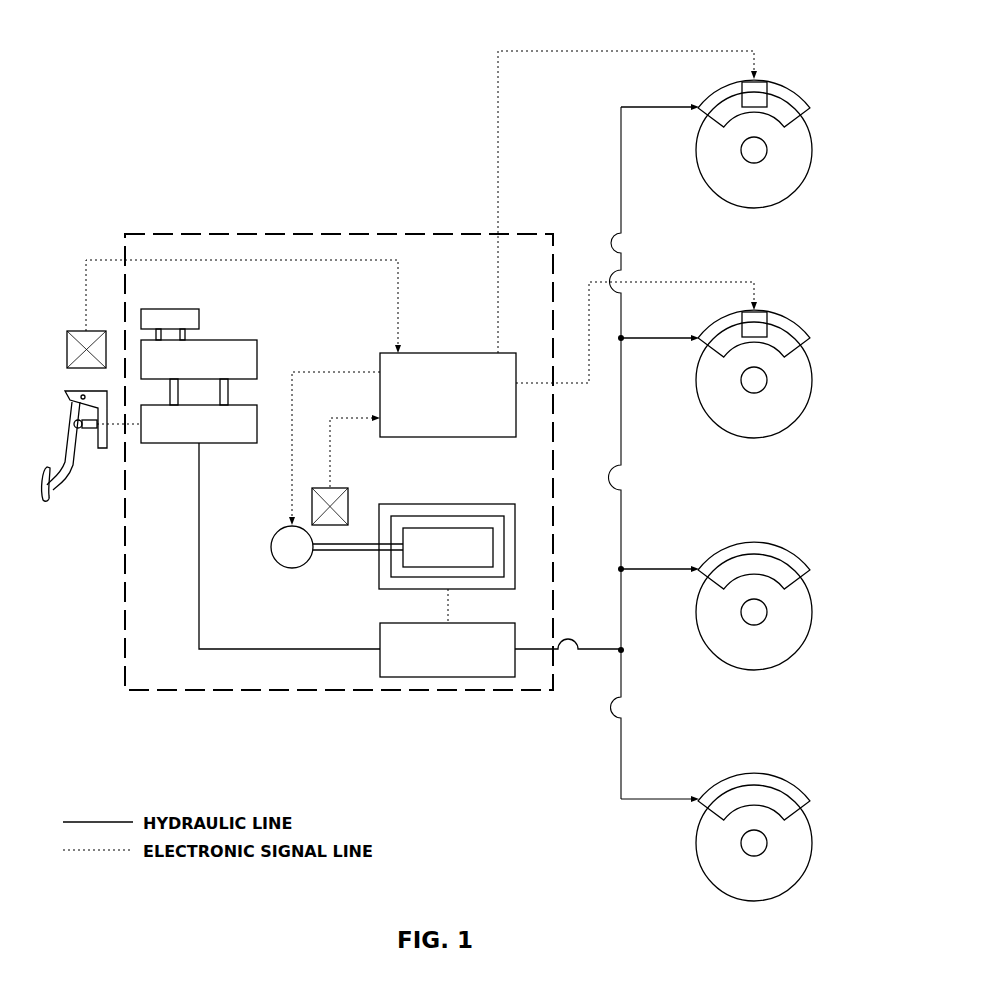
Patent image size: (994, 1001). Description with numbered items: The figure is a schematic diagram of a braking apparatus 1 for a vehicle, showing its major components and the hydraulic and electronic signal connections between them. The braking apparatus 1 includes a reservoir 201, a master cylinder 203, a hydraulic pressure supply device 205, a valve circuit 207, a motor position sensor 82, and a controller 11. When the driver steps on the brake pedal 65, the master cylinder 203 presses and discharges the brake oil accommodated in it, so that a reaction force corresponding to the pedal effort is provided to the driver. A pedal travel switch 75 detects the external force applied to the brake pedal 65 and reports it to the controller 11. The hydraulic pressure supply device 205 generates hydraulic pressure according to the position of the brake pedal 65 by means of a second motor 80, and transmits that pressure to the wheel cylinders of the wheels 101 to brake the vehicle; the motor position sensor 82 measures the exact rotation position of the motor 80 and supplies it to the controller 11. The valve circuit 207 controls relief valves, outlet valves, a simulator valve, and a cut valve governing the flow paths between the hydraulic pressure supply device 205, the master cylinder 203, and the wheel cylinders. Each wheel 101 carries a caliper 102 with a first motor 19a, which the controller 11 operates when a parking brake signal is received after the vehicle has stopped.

The braking apparatus 1 is at (270, 226).
The brake pedal 65 is at (65, 482).
The pedal travel switch 75 is at (67, 345).
The reservoir 201 is at (237, 340).
The master cylinder 203 is at (237, 443).
The second motor 80 is at (271, 549).
The motor position sensor 82 is at (348, 502).
The hydraulic pressure supply device 205 is at (379, 570).
The valve circuit 207 is at (380, 635).
The controller 11 is at (467, 437).
The first motor 19a is at (769, 88).
The wheel 101 is at (701, 146).
The caliper 102 is at (795, 103).